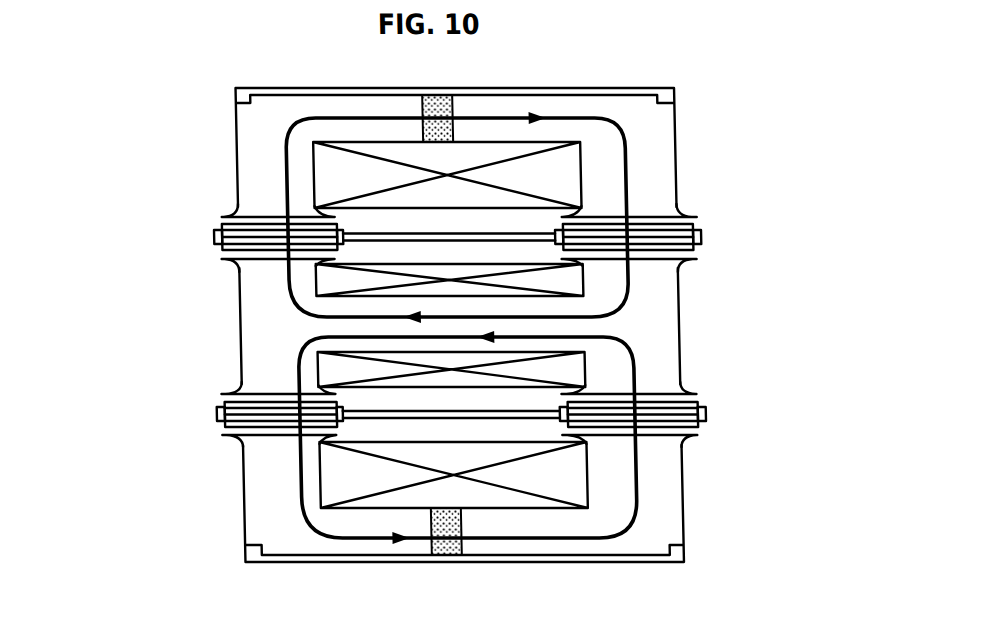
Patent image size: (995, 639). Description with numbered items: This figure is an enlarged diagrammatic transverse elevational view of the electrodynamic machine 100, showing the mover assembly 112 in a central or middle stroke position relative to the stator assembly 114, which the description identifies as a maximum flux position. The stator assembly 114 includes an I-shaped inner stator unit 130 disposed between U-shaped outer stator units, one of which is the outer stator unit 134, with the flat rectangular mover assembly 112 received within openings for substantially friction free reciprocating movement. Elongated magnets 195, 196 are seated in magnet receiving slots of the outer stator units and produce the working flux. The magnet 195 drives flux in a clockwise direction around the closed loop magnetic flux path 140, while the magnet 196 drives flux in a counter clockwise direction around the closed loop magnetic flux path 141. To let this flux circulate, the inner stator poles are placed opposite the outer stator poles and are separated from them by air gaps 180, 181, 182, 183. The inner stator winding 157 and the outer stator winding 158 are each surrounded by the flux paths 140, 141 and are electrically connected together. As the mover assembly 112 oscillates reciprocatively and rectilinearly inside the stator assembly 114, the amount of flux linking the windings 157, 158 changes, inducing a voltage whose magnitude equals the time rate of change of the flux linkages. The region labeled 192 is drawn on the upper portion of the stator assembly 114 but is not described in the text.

The electrodynamic machine 100 is at (178, 574).
The mover assembly 112 is at (210, 221).
The stator assembly 114 is at (727, 128).
The inner stator unit 130 is at (662, 287).
The outer stator unit 134 is at (258, 483).
The closed loop magnetic flux path 140 is at (636, 187).
The closed loop magnetic flux path 141 is at (632, 494).
The inner stator winding 157 is at (333, 282).
The outer stator winding 158 is at (397, 148).
The air gap 180 is at (210, 255).
The air gap 181 is at (206, 431).
The air gap 182 is at (714, 220).
The air gap 183 is at (716, 391).
The housing upper section 192 is at (249, 153).
The magnet 195 is at (452, 94).
The magnet 196 is at (450, 556).